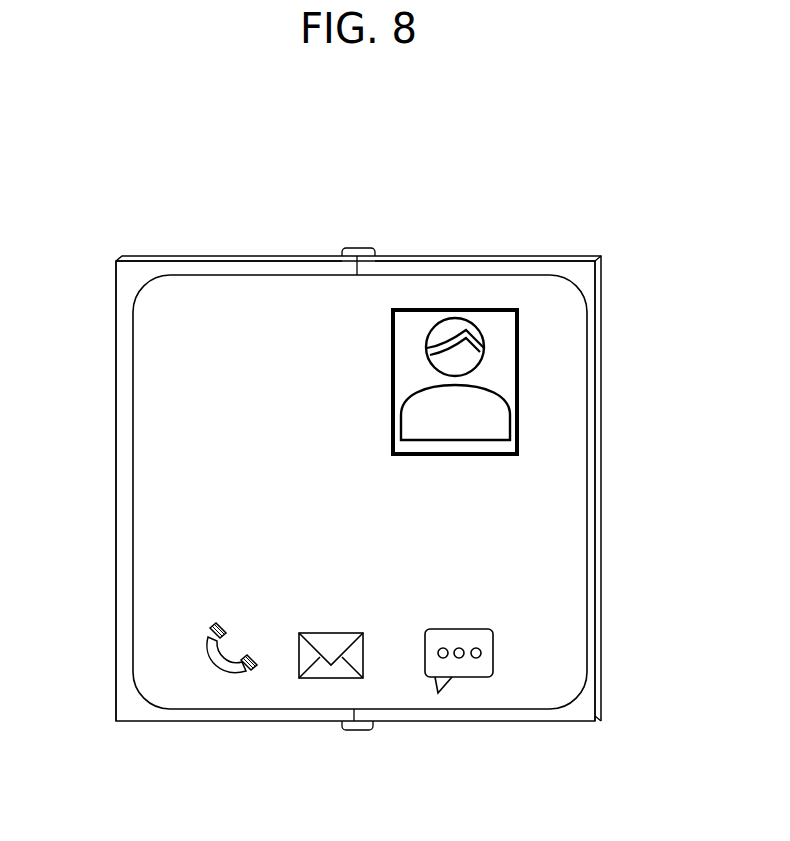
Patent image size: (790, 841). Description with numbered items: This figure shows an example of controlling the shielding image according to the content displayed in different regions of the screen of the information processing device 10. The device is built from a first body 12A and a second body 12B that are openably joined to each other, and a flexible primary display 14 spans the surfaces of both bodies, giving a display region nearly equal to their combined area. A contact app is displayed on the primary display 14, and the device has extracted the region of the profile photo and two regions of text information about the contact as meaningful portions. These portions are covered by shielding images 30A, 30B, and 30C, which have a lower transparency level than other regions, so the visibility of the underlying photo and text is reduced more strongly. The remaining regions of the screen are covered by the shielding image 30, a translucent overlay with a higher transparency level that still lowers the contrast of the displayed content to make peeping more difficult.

The information processing device 10 is at (366, 238).
The first body 12A is at (208, 257).
The second body 12B is at (502, 258).
The primary display 14 is at (265, 283).
The shielding image 30 is at (320, 322).
The shielding image 30A is at (527, 337).
The shielding image 30B is at (157, 378).
The shielding image 30C is at (562, 529).